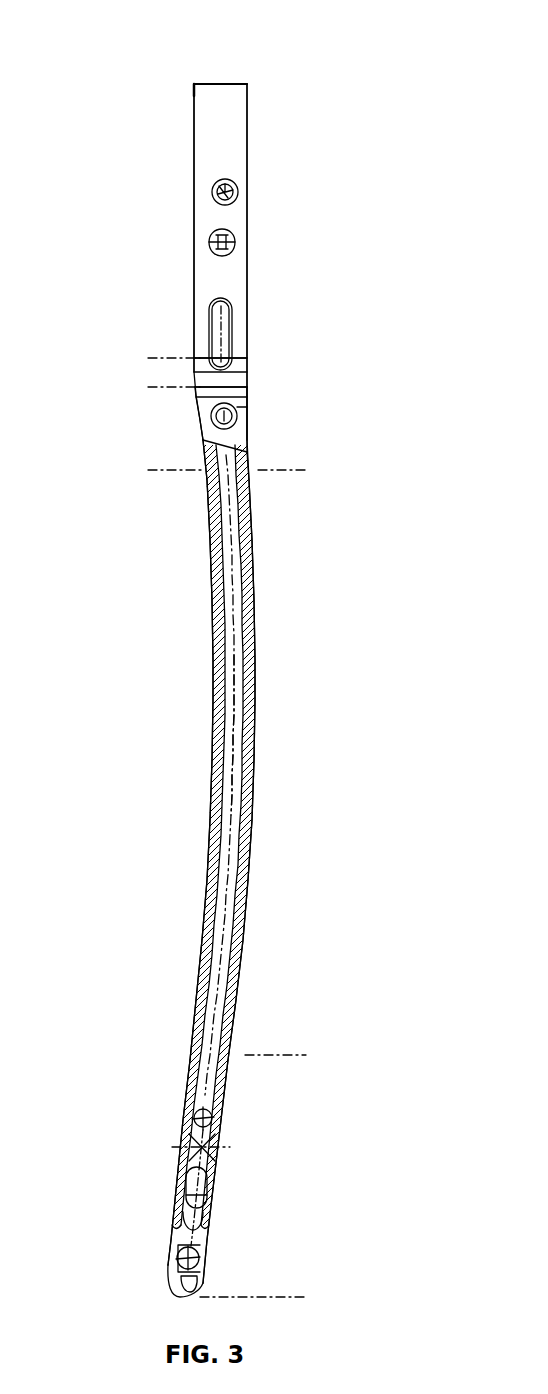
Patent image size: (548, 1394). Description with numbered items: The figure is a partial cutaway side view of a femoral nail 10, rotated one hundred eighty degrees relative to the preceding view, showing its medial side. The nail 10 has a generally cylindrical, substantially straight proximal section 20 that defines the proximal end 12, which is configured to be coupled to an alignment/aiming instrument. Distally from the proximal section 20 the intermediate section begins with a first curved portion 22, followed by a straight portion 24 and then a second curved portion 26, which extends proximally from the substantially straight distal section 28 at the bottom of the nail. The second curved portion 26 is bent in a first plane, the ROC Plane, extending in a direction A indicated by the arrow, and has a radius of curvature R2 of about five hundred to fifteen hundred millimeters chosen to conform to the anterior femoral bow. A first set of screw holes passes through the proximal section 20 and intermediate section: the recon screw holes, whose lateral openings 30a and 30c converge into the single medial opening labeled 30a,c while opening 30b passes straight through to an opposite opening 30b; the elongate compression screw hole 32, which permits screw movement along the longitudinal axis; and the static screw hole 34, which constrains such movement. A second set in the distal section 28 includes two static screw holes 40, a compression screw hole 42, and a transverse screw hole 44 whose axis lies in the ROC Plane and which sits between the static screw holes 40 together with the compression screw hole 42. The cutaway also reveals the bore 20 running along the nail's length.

The femoral nail 10 is at (116, 64).
The proximal end 12 is at (248, 86).
The proximal section 20 is at (142, 92).
The first curved portion 22 is at (147, 357).
The straight portion 24 is at (147, 387).
The second curved portion 26 is at (310, 470).
The distal section 28 is at (310, 1055).
The recon screw hole opening 30a is at (278, 250).
The recon screw hole opening 30b is at (238, 192).
The recon screw hole opening 30c is at (236, 242).
The compression screw hole 32 is at (233, 330).
The static screw hole 34 is at (237, 417).
The static screw holes 40 is at (199, 1108).
The compression screw hole 42 is at (186, 1185).
The transverse screw hole 44 is at (188, 1138).
The radius of curvature R2 is at (243, 740).
The direction A is at (365, 679).